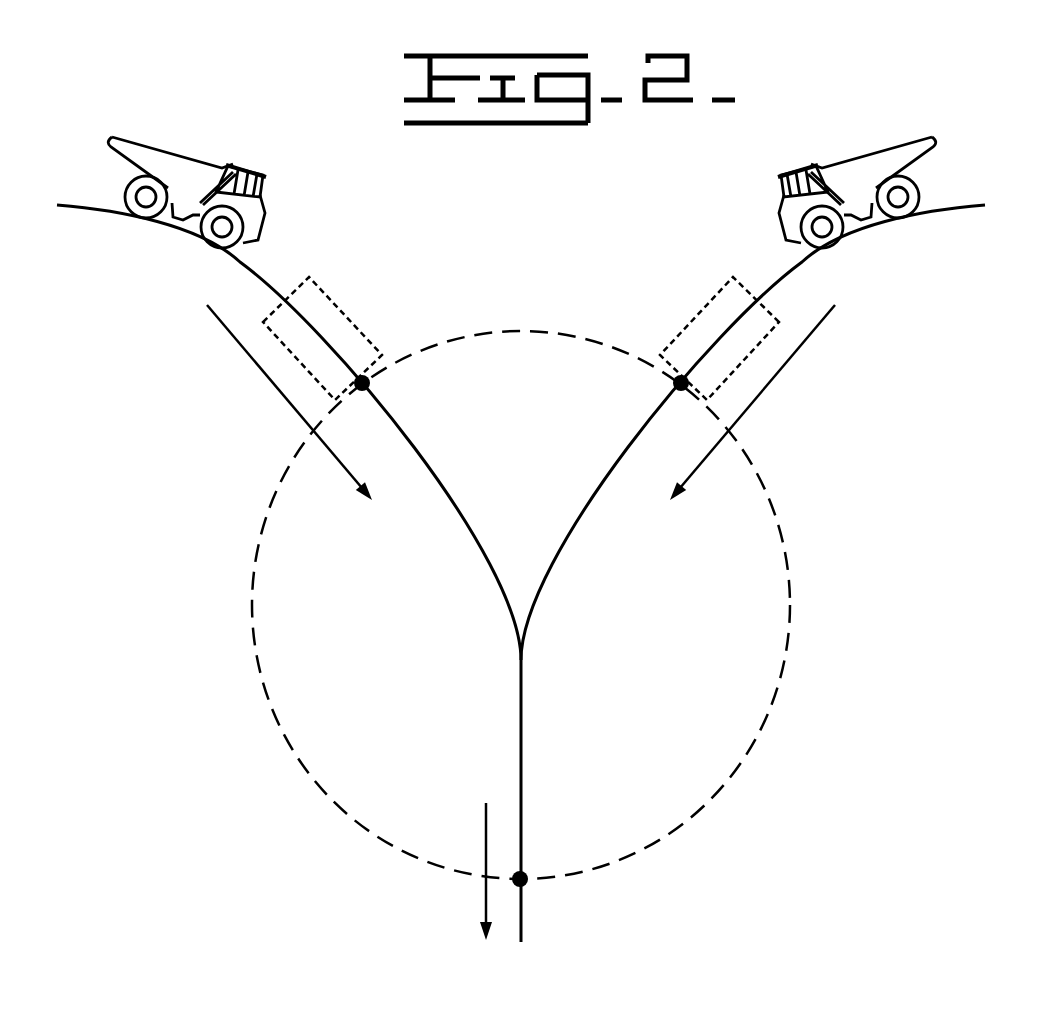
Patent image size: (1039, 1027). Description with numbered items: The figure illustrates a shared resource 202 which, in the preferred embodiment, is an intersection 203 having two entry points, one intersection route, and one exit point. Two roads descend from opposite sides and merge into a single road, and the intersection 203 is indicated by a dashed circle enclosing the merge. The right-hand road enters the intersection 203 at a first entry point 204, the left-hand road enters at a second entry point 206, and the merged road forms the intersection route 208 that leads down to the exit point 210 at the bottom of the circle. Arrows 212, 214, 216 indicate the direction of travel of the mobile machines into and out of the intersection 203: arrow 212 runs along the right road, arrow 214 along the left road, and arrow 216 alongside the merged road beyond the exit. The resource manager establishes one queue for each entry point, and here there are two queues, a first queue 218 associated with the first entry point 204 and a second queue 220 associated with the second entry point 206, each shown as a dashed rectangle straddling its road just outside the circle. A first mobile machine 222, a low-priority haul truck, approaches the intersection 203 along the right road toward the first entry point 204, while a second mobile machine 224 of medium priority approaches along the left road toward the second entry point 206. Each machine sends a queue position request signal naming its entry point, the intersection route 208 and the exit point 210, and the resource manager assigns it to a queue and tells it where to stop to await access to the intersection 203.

The resource 202 is at (572, 605).
The intersection 203 is at (790, 613).
The first entry point 204 is at (672, 383).
The second entry point 206 is at (370, 383).
The intersection route 208 is at (521, 725).
The exit point 210 is at (528, 875).
The arrow 212 is at (757, 392).
The arrow 214 is at (290, 395).
The arrow 216 is at (483, 850).
The first queue 218 is at (700, 318).
The second queue 220 is at (330, 298).
The first mobile machine 222 is at (927, 163).
The second mobile machine 224 is at (263, 190).